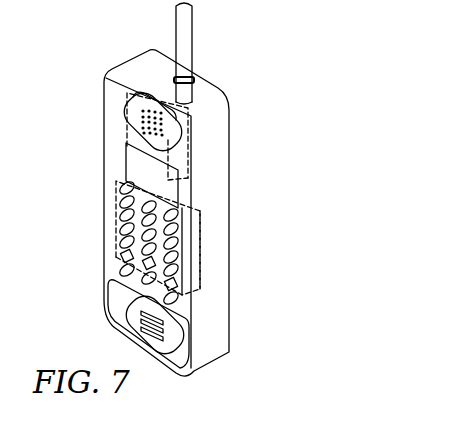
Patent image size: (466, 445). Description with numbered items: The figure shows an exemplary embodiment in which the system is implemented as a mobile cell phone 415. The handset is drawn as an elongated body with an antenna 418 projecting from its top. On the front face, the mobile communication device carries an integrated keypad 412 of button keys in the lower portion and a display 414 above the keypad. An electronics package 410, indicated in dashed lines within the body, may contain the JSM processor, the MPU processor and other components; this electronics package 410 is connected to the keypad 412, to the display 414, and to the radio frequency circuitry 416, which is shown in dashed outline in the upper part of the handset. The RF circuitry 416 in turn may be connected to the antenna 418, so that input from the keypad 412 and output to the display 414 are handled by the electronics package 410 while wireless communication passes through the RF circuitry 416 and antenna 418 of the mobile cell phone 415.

The electronics package 410 is at (198, 259).
The keypad 412 is at (127, 233).
The display 414 is at (127, 170).
The mobile cell phone 415 is at (223, 308).
The radio frequency (RF) circuitry 416 is at (125, 135).
The antenna 418 is at (190, 38).